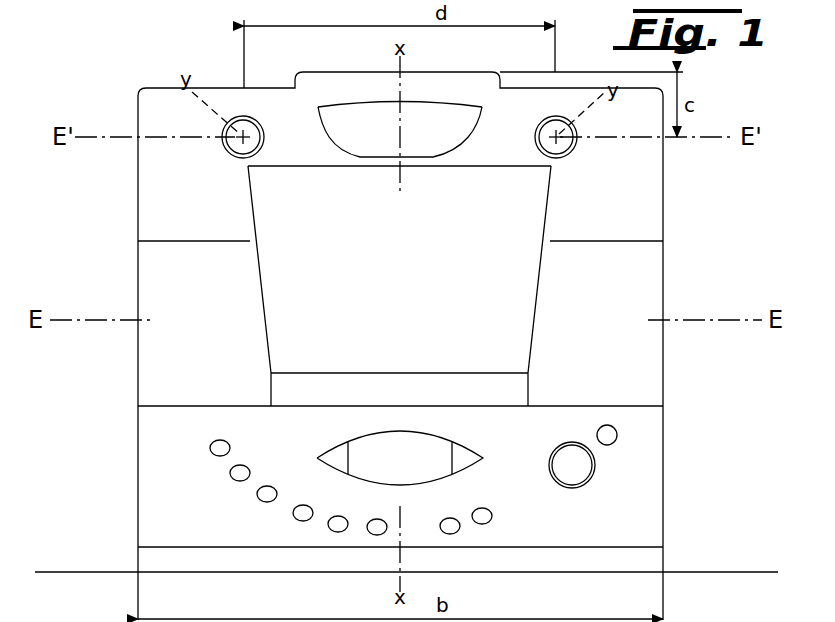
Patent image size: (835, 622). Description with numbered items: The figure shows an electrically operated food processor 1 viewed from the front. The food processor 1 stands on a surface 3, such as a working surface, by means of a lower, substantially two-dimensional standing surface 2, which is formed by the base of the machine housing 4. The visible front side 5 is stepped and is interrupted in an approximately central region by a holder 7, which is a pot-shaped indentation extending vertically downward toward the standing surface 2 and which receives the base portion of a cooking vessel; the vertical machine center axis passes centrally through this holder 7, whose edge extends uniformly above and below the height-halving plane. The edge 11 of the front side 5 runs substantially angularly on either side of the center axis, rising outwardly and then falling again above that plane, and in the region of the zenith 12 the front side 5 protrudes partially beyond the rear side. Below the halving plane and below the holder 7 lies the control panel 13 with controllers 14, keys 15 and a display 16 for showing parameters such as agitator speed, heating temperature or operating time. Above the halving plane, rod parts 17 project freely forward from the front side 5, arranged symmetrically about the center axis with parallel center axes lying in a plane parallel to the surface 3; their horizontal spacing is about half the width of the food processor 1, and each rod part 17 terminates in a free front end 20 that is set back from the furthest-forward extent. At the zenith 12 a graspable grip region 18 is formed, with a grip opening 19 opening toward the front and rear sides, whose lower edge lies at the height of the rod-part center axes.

The food processor 1 is at (136, 98).
The standing surface 2 is at (228, 572).
The surface 3 is at (735, 572).
The machine housing 4 is at (137, 370).
The front side 5 is at (600, 270).
The holder 7 is at (488, 328).
The edge 11 is at (637, 292).
The zenith 12 is at (462, 90).
The control panel 13 is at (607, 435).
The controllers 14 is at (572, 475).
The keys 15 is at (302, 510).
The display 16 is at (400, 472).
The rod parts 17 is at (247, 160).
The grip region 18 is at (335, 92).
The grip opening 19 is at (367, 118).
The free front end 20 is at (236, 143).